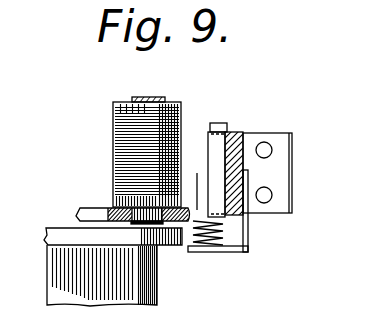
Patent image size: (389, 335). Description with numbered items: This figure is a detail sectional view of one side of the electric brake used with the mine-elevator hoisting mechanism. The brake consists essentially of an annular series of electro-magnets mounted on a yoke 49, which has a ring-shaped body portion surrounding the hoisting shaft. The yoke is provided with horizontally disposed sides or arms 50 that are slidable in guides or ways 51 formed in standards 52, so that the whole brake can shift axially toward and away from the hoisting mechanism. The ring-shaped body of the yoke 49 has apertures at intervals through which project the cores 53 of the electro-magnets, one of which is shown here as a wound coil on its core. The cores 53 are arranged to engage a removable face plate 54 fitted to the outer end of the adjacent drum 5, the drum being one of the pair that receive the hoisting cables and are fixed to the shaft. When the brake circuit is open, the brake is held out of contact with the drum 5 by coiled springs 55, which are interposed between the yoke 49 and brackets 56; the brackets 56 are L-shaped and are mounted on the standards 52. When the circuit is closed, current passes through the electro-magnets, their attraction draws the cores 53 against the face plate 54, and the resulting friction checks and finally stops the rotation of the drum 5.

The drum 5 is at (77, 283).
The yoke 49 is at (110, 208).
The sides or arms 50 is at (217, 173).
The guides or ways 51 is at (201, 150).
The standards 52 is at (238, 134).
The cores 53 is at (137, 206).
The face plate 54 is at (167, 246).
The coiled springs 55 is at (228, 252).
The brackets 56 is at (248, 235).